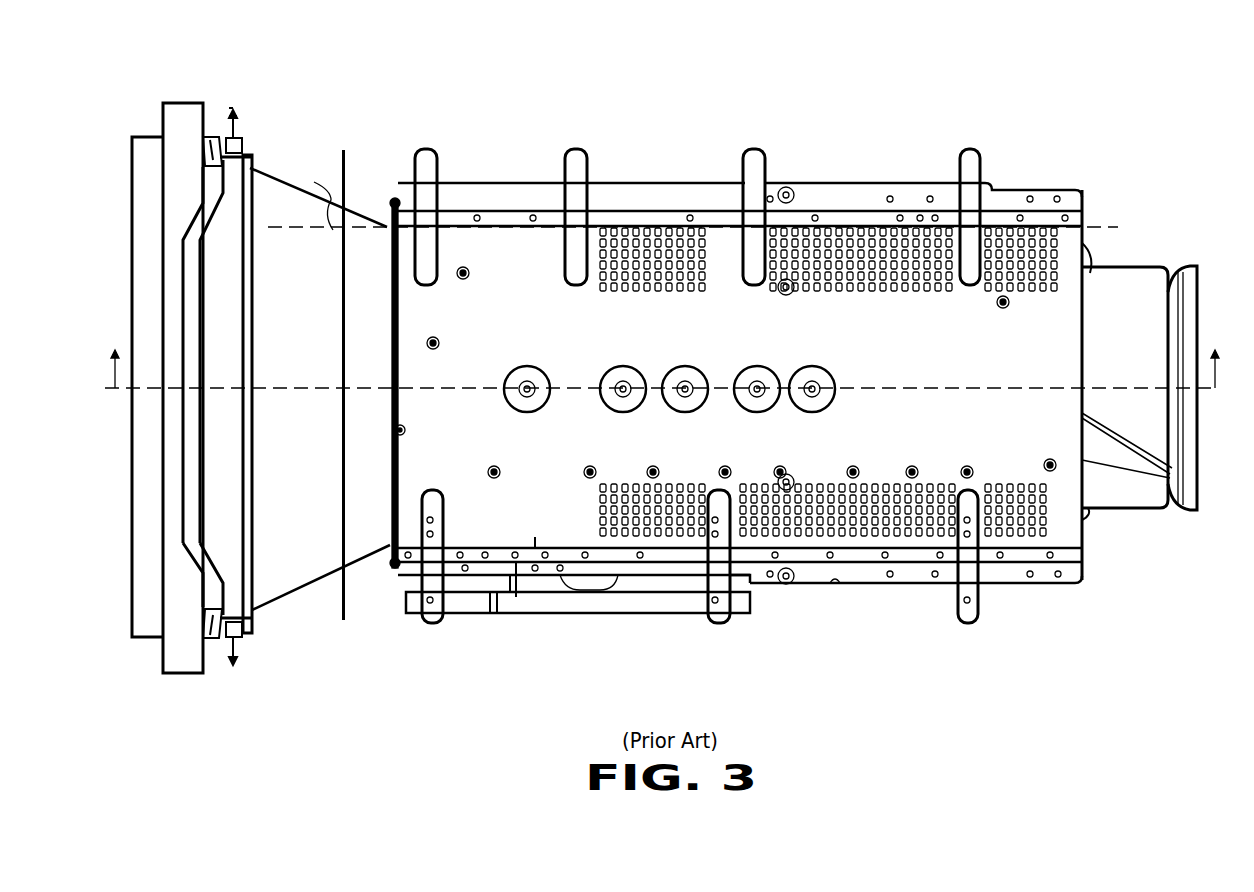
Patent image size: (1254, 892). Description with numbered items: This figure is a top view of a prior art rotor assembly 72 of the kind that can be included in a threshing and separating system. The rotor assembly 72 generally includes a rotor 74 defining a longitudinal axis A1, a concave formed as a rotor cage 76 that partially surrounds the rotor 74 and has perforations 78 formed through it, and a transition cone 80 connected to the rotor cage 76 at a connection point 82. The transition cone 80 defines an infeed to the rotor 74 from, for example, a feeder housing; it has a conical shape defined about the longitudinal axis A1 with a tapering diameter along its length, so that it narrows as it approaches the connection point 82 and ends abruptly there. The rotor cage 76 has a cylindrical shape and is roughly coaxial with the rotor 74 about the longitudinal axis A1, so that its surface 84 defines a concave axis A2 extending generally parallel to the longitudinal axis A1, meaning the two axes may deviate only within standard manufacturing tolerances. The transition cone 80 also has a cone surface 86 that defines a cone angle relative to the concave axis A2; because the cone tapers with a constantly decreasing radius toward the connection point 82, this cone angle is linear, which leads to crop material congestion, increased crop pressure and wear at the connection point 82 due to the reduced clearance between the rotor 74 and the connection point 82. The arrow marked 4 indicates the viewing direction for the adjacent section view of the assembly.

The rotor assembly 72 is at (836, 80).
The rotor 74 is at (1102, 272).
The rotor cage 76 is at (737, 230).
The perforations 78 is at (677, 230).
The transition cone 80 is at (275, 180).
The connection point 82 is at (345, 212).
The surface 84 is at (527, 336).
The cone surface 86 is at (318, 294).
The longitudinal axis A1 is at (1118, 388).
The concave axis A2 is at (1098, 232).
The section view indicator 4 is at (665, 355).